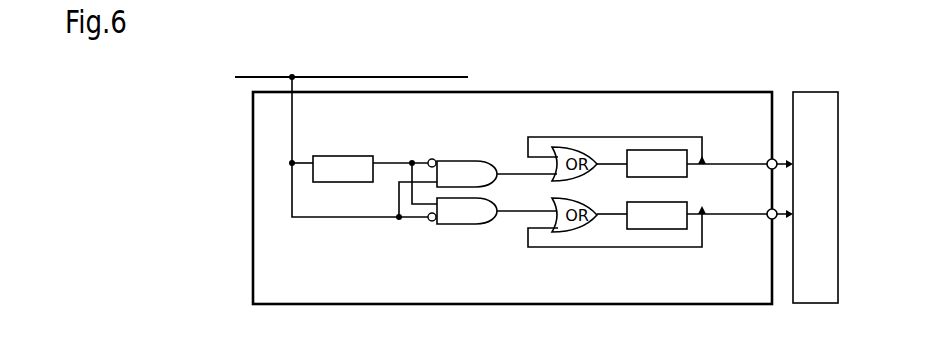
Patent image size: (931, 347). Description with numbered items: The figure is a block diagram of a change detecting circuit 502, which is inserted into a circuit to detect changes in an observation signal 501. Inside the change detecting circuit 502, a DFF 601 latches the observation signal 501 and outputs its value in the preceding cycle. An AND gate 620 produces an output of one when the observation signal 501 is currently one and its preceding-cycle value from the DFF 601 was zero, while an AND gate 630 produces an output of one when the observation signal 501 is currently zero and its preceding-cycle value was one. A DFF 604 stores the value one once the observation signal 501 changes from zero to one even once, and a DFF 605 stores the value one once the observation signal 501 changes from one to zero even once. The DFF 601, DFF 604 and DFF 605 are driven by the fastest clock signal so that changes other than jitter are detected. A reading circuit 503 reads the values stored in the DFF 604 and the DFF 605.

The observation signal 501 is at (470, 76).
The change detecting circuit 502 is at (528, 93).
The reading circuit 503 is at (800, 91).
The DFF 601 is at (358, 156).
The AND gate 620 is at (437, 161).
The AND gate 630 is at (460, 224).
The DFF 604 is at (643, 150).
The DFF 605 is at (665, 229).